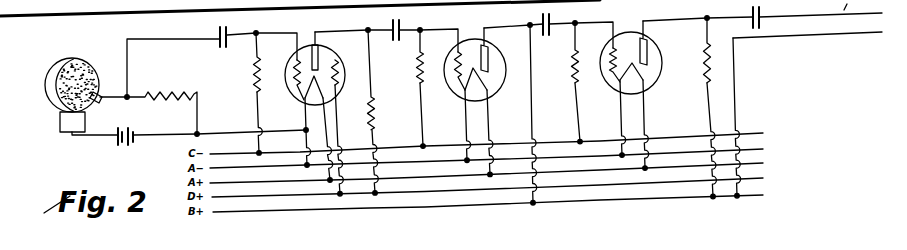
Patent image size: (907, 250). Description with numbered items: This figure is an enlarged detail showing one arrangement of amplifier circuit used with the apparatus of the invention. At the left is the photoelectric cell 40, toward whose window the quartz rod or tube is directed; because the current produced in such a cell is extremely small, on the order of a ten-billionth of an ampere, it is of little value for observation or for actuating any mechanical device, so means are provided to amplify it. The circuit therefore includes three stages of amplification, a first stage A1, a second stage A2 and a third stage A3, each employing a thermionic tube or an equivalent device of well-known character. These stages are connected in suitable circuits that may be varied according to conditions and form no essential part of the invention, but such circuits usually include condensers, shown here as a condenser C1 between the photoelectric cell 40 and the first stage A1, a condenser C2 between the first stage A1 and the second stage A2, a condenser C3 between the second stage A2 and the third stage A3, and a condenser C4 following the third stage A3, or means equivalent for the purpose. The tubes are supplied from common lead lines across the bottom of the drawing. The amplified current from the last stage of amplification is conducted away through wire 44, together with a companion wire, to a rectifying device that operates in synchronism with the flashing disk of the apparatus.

The photoelectric cell 40 is at (82, 58).
The condenser C1 is at (229, 27).
The condenser C2 is at (400, 23).
The condenser C3 is at (557, 16).
The condenser C4 is at (763, 9).
The first stage of amplification A1 is at (307, 27).
The second stage of amplification A2 is at (473, 23).
The third stage of amplification A3 is at (626, 21).
The wire 44 is at (851, 34).